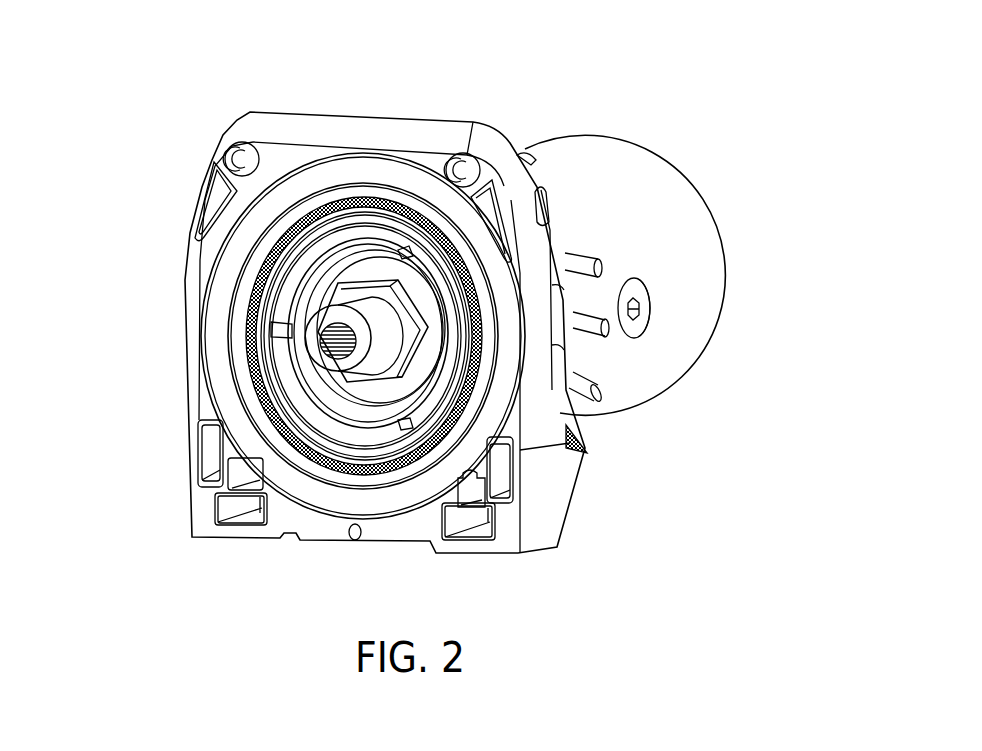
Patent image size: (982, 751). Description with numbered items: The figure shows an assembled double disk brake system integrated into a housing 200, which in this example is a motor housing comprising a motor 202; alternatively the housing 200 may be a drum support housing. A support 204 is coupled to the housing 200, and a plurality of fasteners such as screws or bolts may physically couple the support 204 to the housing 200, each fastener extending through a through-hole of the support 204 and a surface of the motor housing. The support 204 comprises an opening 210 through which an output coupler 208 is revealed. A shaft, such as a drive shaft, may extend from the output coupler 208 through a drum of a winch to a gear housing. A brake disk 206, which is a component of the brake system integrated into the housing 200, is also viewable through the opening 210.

The housing 200 is at (141, 89).
The motor 202 is at (663, 162).
The support 204 is at (192, 240).
The brake disk 206 is at (312, 296).
The output coupler 208 is at (373, 350).
The opening 210 is at (367, 430).